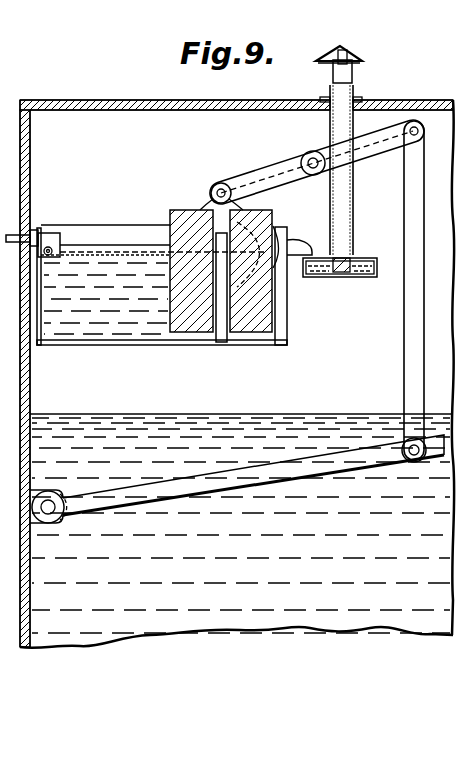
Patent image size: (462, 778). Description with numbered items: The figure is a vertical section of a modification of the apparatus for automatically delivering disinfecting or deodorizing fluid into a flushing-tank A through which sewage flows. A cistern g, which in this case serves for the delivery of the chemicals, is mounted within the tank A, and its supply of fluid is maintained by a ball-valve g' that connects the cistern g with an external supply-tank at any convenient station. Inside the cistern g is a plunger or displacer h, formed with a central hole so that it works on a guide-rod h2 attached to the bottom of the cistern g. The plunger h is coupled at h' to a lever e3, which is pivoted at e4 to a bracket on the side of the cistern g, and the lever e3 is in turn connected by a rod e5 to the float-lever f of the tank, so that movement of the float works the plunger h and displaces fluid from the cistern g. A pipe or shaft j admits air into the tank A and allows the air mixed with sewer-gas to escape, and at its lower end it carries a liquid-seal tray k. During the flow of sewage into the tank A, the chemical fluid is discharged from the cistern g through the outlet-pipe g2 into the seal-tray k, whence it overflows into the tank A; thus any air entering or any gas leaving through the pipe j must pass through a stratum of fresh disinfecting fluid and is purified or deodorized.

The flushing-tank A is at (237, 374).
The cistern g is at (162, 285).
The ball-valve g' is at (43, 217).
The outlet-pipe g2 is at (296, 247).
The plunger or displacer h is at (224, 265).
The coupling of plunger to lever h' is at (219, 179).
The guide-rod h2 is at (228, 328).
The lever e3 is at (317, 162).
The pivot of lever e4 is at (311, 157).
The rod e5 is at (414, 291).
The pipe or shaft j is at (350, 184).
The liquid-seal tray k is at (350, 269).
The float-lever f is at (237, 479).